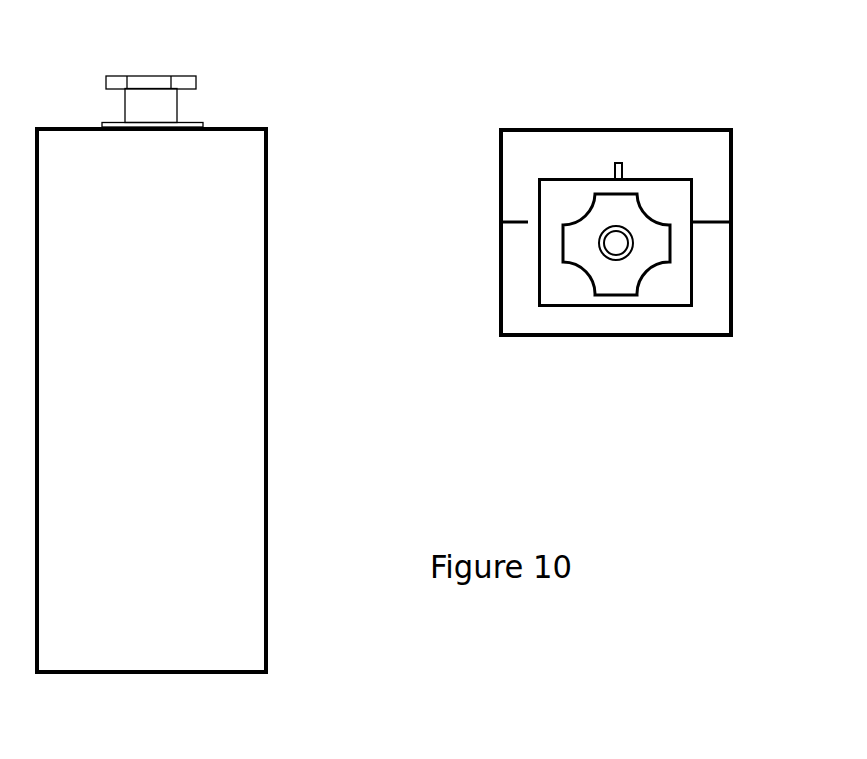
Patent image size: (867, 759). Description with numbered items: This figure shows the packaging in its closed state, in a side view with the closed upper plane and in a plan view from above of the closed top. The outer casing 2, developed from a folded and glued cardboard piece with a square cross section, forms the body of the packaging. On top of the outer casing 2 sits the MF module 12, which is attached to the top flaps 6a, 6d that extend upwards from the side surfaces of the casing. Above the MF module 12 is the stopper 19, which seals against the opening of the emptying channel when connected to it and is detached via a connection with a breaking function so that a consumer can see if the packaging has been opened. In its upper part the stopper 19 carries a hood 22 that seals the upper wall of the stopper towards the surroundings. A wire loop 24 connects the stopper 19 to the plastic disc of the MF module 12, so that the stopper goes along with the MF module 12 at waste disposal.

The outer casing 2 is at (338, 410).
The MF module 12 is at (222, 95).
The stopper 19 is at (125, 103).
The hood 22 is at (180, 75).
The wire loop 24 is at (625, 168).
The top flap 6a is at (733, 263).
The top flap 6d is at (733, 182).